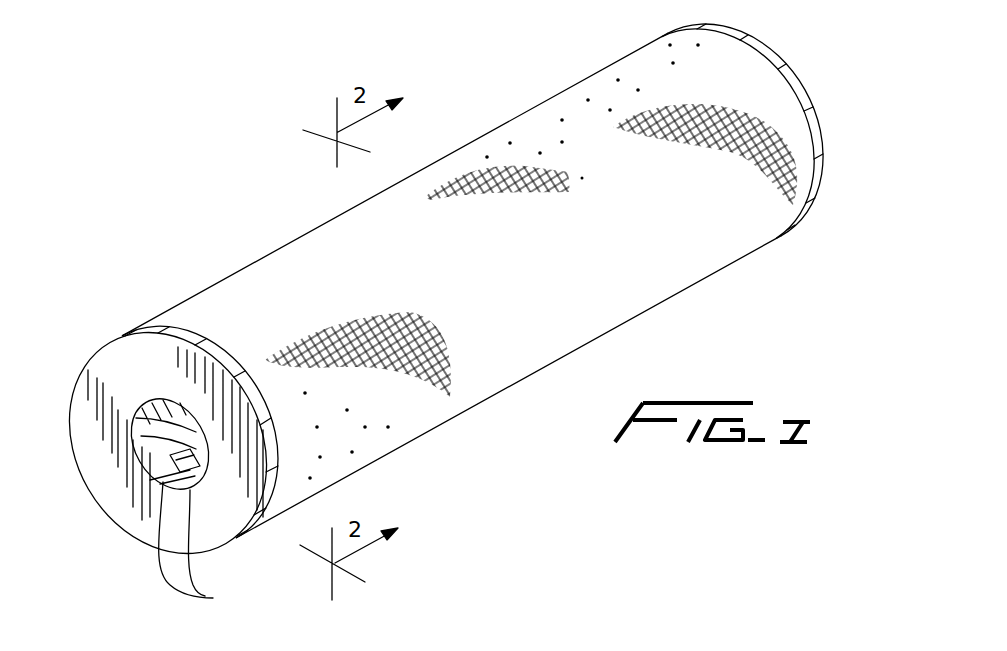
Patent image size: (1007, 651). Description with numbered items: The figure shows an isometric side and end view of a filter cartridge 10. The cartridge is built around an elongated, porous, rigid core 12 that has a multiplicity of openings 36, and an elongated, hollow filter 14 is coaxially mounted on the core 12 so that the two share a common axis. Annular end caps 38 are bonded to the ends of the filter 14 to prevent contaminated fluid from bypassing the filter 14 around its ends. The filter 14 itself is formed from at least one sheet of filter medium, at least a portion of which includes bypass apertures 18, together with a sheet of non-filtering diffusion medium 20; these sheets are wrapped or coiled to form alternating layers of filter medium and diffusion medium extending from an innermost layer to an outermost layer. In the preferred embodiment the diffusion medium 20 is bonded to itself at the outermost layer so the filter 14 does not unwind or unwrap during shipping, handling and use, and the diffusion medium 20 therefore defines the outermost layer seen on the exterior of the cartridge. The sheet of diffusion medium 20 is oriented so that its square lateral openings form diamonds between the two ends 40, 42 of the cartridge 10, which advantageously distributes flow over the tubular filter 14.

The filter cartridge 10 is at (281, 216).
The core 12 is at (147, 453).
The filter 14 is at (484, 389).
The bypass apertures 18 is at (650, 60).
The diffusion medium 20 is at (668, 285).
The openings 36 is at (201, 547).
The end caps 38 is at (83, 478).
The end 40 is at (127, 368).
The end 42 is at (822, 130).